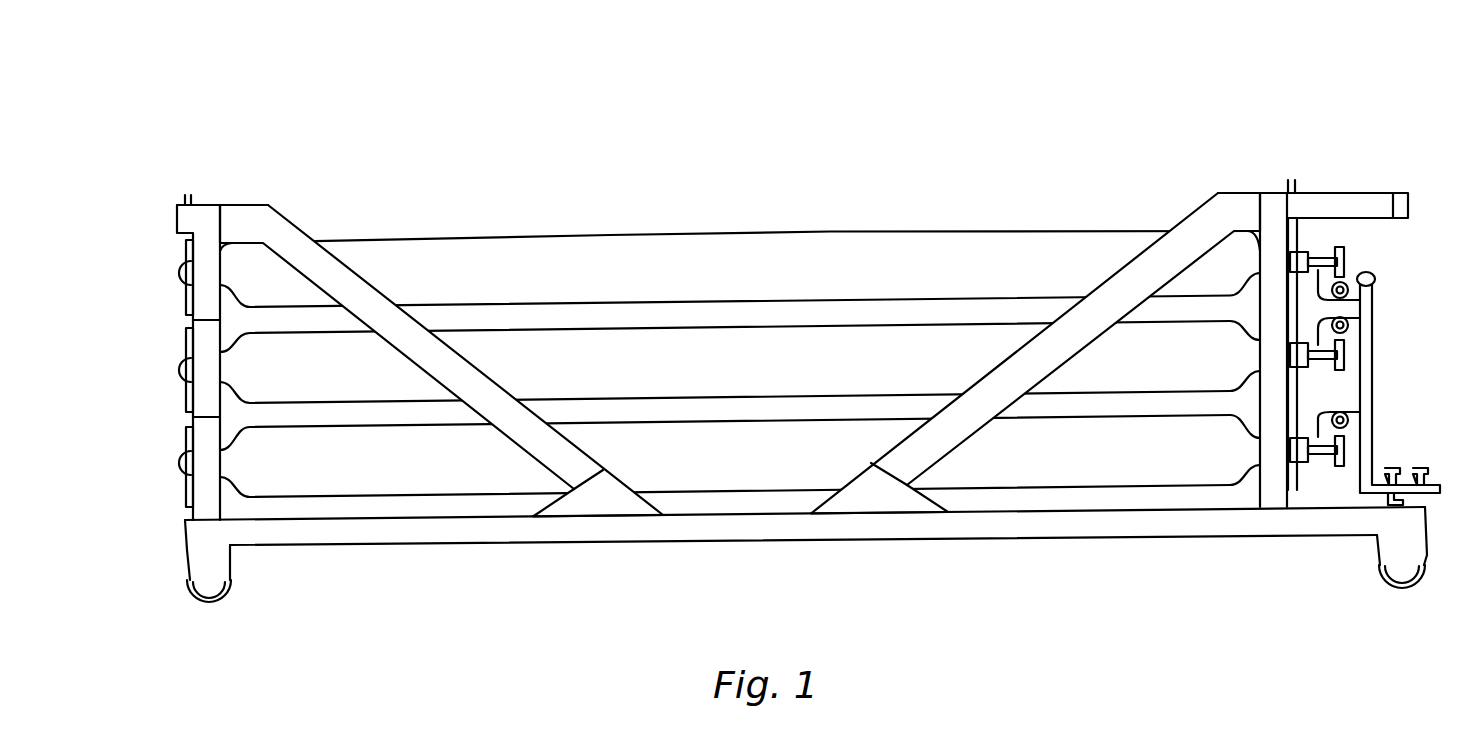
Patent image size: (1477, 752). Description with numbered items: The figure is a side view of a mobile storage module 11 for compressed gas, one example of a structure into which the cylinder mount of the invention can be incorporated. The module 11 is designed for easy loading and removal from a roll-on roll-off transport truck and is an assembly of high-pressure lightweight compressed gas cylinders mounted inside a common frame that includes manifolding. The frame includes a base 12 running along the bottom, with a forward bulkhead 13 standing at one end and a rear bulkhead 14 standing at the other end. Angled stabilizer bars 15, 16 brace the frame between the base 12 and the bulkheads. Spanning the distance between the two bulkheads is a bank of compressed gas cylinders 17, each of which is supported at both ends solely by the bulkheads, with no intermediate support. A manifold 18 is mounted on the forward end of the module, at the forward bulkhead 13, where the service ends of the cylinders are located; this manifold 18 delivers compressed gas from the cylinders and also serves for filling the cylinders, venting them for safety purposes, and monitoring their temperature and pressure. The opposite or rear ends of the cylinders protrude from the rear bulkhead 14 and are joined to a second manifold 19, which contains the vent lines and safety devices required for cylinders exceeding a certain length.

The mobile storage module 11 is at (1100, 141).
The base 12 is at (800, 540).
The forward bulkhead 13 is at (1260, 487).
The rear bulkhead 14 is at (220, 503).
The angled stabilizer bar 15 is at (950, 457).
The angled stabilizer bar 16 is at (528, 455).
The compressed gas cylinders 17 is at (805, 231).
The manifold 18 is at (1372, 370).
The manifold 19 is at (186, 343).